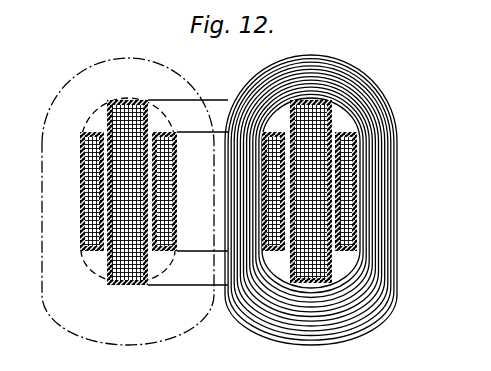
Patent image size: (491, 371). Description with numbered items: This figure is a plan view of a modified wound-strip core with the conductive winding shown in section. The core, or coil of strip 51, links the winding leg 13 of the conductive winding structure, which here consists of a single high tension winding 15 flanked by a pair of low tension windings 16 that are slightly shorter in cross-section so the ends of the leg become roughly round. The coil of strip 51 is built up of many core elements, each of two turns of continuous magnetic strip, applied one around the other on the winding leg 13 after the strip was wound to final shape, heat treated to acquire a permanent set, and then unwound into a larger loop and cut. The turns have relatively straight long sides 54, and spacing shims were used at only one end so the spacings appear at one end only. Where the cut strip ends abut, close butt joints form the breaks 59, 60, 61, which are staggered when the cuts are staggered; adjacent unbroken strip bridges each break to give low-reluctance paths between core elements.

The coil of strip 51 is at (340, 72).
The high tension winding 15 is at (325, 107).
The low tension windings 16 is at (350, 140).
The break 60 is at (367, 195).
The break 61 is at (373, 202).
The long sides 54 is at (233, 197).
The break 59 is at (365, 212).
The winding leg 13 is at (332, 255).